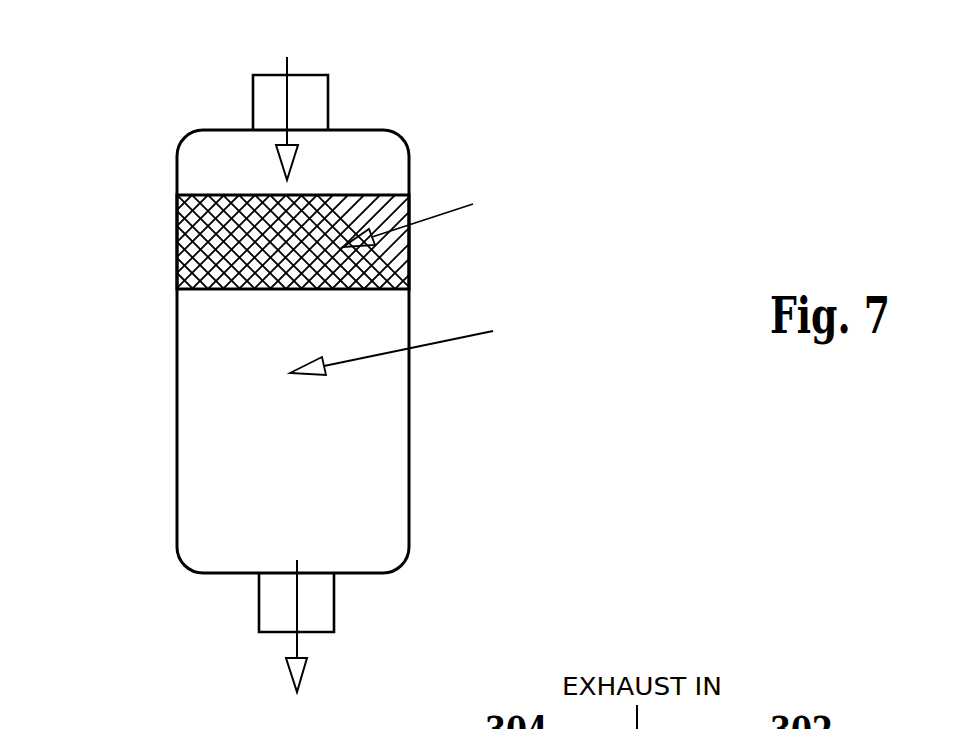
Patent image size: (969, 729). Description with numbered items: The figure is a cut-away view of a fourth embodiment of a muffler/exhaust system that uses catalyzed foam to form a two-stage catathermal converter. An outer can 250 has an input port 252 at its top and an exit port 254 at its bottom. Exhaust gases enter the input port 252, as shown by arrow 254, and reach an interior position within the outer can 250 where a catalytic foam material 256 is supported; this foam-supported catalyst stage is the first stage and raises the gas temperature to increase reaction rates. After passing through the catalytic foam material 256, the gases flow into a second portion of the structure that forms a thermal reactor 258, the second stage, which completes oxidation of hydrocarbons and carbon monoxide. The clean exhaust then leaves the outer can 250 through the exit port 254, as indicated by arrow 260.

The outer can 250 is at (409, 313).
The input port 252 is at (308, 115).
The exit port 254 is at (287, 117).
The catalytic foam material 256 is at (202, 257).
The thermal reactor 258 is at (374, 492).
The arrow 260 is at (298, 598).